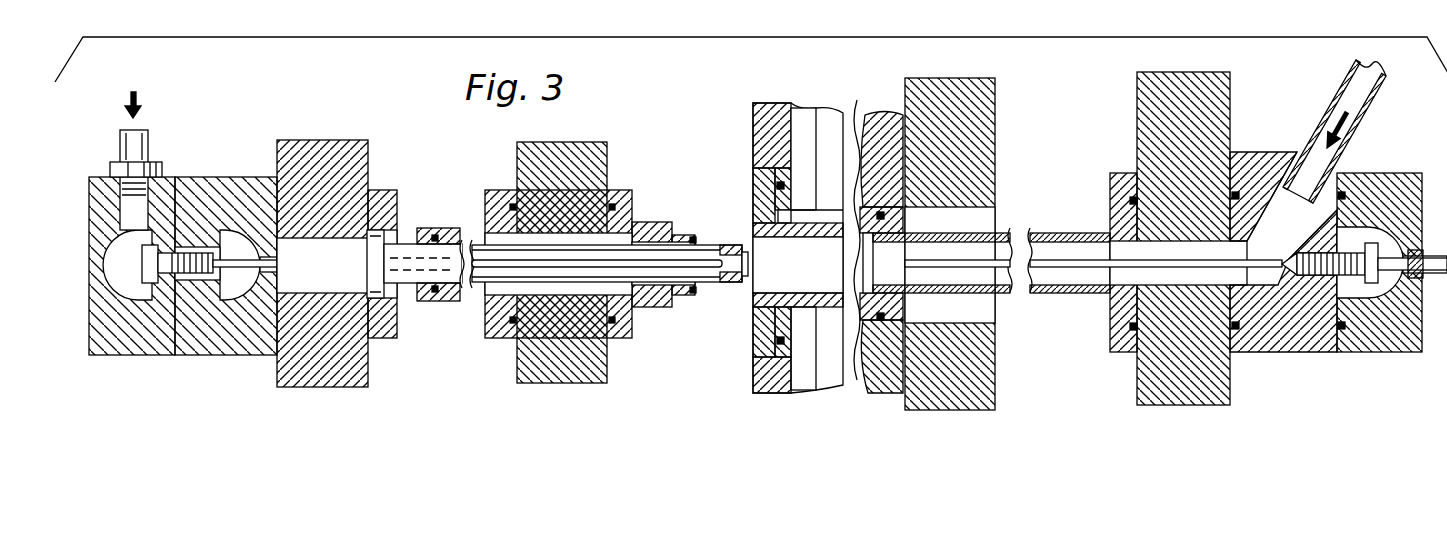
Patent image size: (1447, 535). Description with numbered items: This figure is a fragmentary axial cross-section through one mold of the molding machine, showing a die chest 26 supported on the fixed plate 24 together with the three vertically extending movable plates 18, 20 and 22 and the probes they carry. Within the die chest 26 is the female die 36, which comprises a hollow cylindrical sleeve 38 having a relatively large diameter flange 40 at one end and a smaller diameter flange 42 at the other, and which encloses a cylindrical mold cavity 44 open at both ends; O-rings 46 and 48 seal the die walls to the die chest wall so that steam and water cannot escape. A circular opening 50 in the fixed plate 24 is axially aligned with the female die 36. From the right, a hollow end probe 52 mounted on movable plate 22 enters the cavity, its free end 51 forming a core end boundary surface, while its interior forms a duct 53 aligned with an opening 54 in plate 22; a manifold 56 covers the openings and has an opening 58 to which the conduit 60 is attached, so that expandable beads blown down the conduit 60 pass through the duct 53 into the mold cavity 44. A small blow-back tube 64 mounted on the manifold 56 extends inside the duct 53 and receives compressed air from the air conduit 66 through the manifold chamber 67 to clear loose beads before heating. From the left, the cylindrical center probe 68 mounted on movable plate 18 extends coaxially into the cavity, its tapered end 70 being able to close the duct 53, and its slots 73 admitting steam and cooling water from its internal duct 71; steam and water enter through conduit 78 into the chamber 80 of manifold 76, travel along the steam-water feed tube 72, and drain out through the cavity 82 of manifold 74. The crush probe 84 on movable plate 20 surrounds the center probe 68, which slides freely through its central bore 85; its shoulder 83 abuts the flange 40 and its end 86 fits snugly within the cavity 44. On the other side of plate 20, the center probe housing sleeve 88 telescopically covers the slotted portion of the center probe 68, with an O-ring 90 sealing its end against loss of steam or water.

The movable plate 18 is at (345, 370).
The movable plate 20 is at (557, 375).
The movable plate 22 is at (1190, 378).
The fixed plate 24 is at (925, 380).
The die chest 26 is at (777, 262).
The female die 36 is at (783, 287).
The hollow cylindrical sleeve 38 is at (783, 320).
The flange 40 is at (757, 180).
The flange 42 is at (900, 194).
The mold cavity 44 is at (830, 282).
The O-ring 46 is at (802, 172).
The O-ring 48 is at (895, 186).
The circular opening 50 is at (985, 210).
The free end 51 is at (845, 300).
The end probe 52 is at (1070, 226).
The duct 53 is at (935, 285).
The opening 54 is at (1175, 245).
The manifold 56 is at (1245, 155).
The opening 58 is at (1272, 175).
The conduit 60 is at (1373, 110).
The blow-back tube 64 is at (1087, 272).
The air conduit 66 is at (1400, 300).
The manifold chamber 67 is at (1355, 233).
The center probe 68 is at (730, 245).
The tapered end 70 is at (753, 245).
The duct 71 is at (555, 255).
The steam-water feed tube 72 is at (292, 272).
The slots 73 is at (555, 280).
The manifold 74 is at (210, 345).
The manifold 76 is at (140, 340).
The conduit 78 is at (140, 131).
The hollow interior chamber 80 is at (132, 290).
The hollow interior cavity 82 is at (254, 232).
The shoulder 83 is at (692, 300).
The crush probe 84 is at (668, 315).
The central bore 85 is at (625, 248).
The end 86 is at (692, 240).
The center probe housing sleeve 88 is at (435, 292).
The O-ring 90 is at (432, 228).